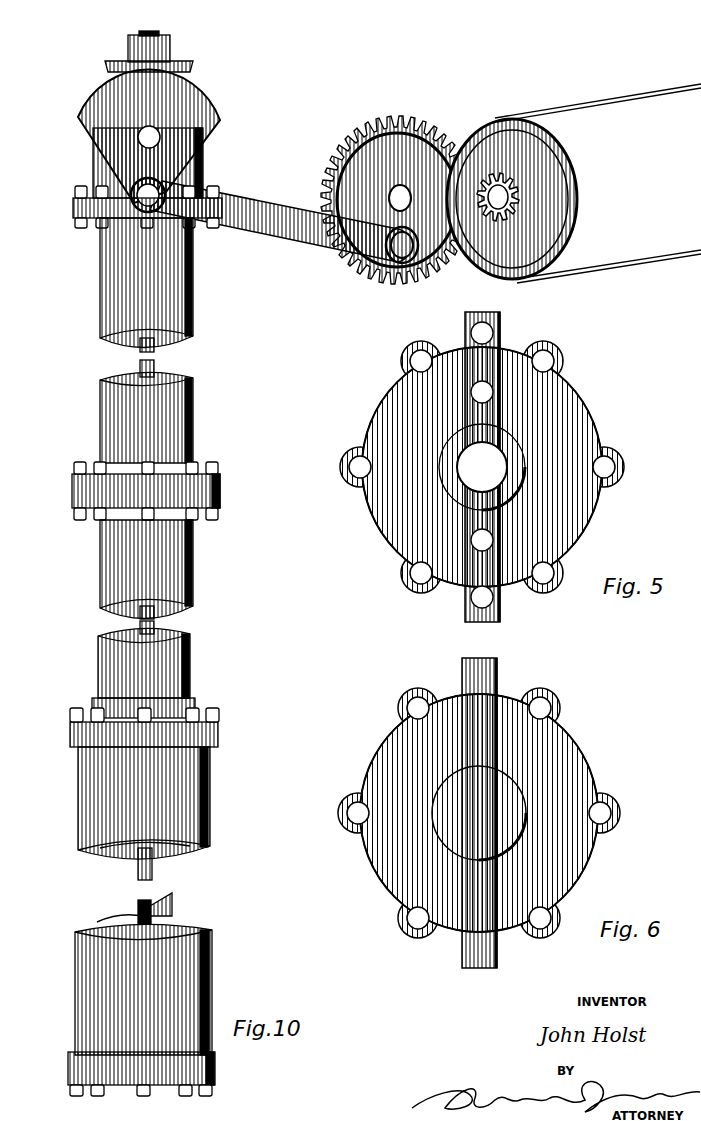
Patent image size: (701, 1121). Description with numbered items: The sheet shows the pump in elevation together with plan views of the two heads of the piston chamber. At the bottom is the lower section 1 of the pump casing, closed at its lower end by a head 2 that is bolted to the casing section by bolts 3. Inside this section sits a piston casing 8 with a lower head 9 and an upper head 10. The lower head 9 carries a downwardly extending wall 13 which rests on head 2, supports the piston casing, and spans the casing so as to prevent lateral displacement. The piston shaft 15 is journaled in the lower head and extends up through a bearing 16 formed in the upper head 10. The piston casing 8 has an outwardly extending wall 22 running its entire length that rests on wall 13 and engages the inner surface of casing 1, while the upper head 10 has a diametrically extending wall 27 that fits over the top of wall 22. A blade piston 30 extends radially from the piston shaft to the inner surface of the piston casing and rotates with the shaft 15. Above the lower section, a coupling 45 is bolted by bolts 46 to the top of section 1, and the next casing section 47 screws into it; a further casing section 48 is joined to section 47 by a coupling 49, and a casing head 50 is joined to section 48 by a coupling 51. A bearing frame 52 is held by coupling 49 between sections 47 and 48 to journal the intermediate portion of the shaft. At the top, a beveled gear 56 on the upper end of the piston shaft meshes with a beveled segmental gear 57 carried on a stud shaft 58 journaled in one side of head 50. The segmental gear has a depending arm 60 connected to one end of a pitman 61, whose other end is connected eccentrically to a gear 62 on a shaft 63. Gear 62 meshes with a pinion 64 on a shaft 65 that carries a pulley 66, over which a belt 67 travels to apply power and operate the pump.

In FIG. 10, the lower section of the pump casing 1 is at (211, 790).
In FIG. 10, the head 2 is at (215, 1078).
In FIG. 10, the bolts 3 is at (212, 1091).
In FIG. 10, the piston casing 8 is at (190, 860).
In FIG. 6, the lower head 9 is at (590, 760).
In FIG. 5, the upper head 10 is at (590, 400).
In FIG. 6, the downwardly extending wall 13 is at (460, 948).
In FIG. 10, the piston shaft 15 is at (160, 34).
In FIG. 5, the bearing 16 is at (510, 480).
In FIG. 10, the outwardly extending wall 22 is at (142, 856).
In FIG. 5, the diametrically extending wall 27 is at (505, 332).
In FIG. 10, the blade piston 30 is at (172, 902).
In FIG. 10, the coupling 45 is at (196, 707).
In FIG. 10, the bolts 46 is at (70, 716).
In FIG. 10, the casing section 47 is at (194, 576).
In FIG. 10, the casing section 48 is at (194, 301).
In FIG. 10, the coupling 49 is at (127, 491).
In FIG. 10, the casing head 50 is at (204, 158).
In FIG. 10, the coupling 51 is at (73, 209).
In FIG. 10, the bearing frame 52 is at (222, 491).
In FIG. 10, the beveled gear 56 is at (182, 62).
In FIG. 10, the beveled segmental gear 57 is at (215, 100).
In FIG. 10, the stud shaft 58 is at (146, 137).
In FIG. 10, the depending arm 60 is at (168, 175).
In FIG. 10, the pitman 61 is at (281, 228).
In FIG. 10, the gear 62 is at (409, 126).
In FIG. 10, the shaft 63 is at (396, 195).
In FIG. 10, the pinion 64 is at (520, 190).
In FIG. 10, the shaft 65 is at (508, 204).
In FIG. 10, the pulley 66 is at (553, 152).
In FIG. 10, the belt 67 is at (494, 120).